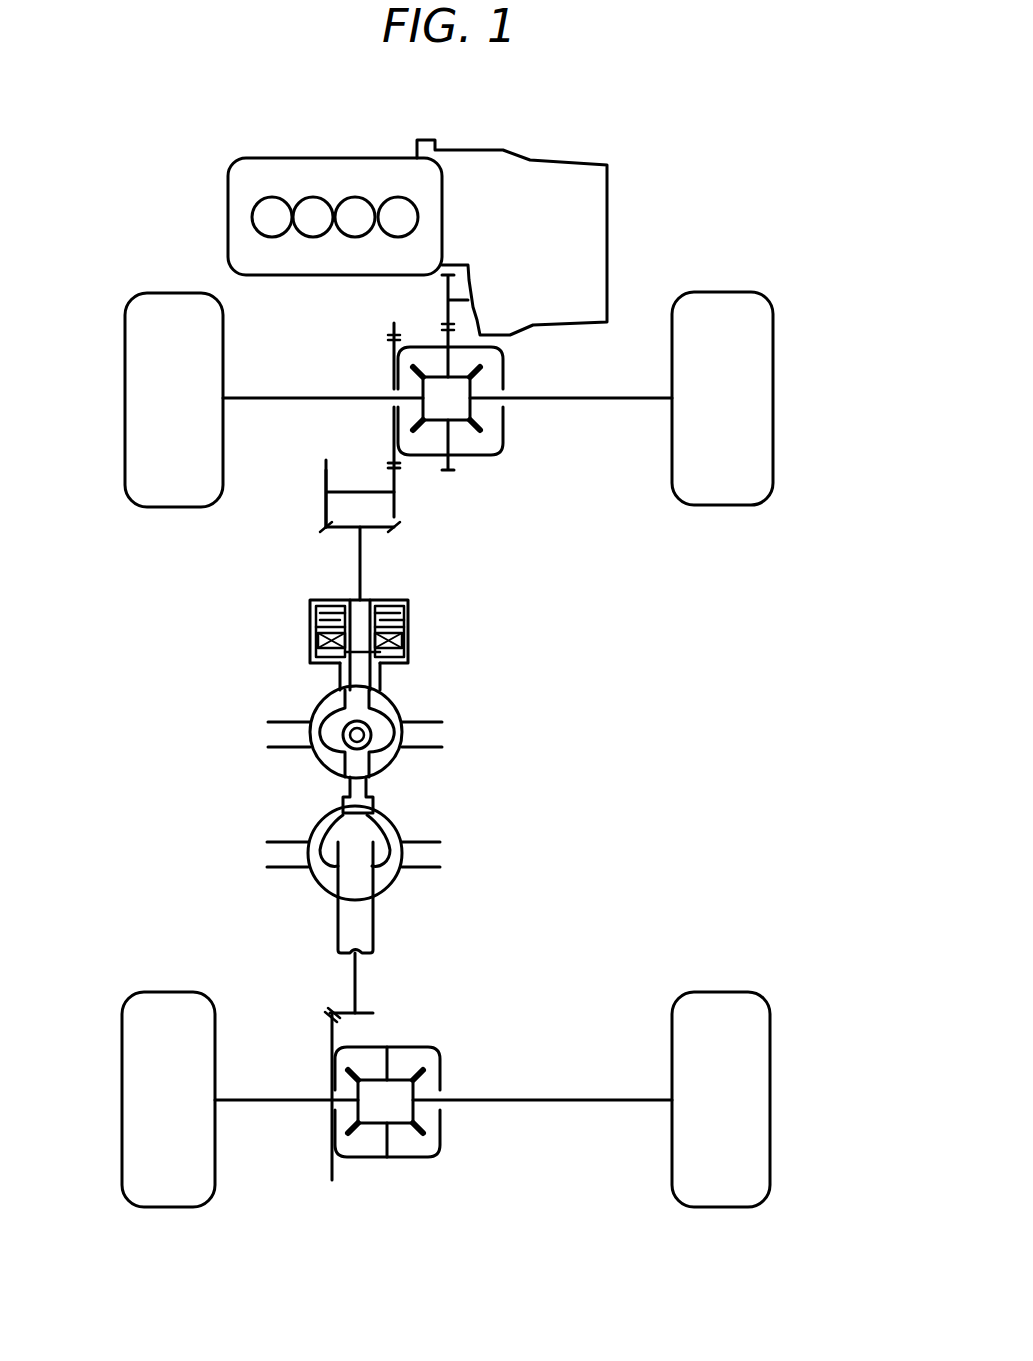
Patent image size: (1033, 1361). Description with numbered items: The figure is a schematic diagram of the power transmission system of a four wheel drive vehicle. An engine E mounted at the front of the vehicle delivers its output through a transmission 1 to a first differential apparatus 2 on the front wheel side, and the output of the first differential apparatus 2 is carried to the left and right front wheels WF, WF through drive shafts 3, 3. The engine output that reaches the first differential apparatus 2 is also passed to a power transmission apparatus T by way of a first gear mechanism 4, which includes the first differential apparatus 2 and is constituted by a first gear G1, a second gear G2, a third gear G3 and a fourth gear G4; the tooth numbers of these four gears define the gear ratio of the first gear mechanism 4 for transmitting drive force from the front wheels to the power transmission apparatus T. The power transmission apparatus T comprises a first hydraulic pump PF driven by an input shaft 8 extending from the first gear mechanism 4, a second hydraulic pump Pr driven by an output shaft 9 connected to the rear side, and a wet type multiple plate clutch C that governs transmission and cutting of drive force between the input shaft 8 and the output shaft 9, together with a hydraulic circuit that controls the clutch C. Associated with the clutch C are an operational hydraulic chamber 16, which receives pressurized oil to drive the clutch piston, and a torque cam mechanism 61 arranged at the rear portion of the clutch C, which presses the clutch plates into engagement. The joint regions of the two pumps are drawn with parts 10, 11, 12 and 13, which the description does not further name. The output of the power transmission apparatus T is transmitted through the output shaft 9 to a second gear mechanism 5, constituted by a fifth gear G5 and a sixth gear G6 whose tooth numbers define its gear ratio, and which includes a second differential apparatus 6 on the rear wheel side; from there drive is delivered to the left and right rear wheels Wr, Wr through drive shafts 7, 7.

The engine E is at (263, 150).
The transmission 1 is at (593, 225).
The front wheels WF is at (175, 300).
The rear wheels Wr is at (170, 1000).
The first differential apparatus 2 is at (503, 380).
The drive shafts 3 is at (328, 398).
The first gear mechanism 4 is at (312, 512).
The first gear G1 is at (393, 322).
The second gear G2 is at (398, 472).
The third gear G3 is at (326, 458).
The fourth gear G4 is at (390, 531).
The fifth gear G5 is at (332, 1186).
The sixth gear G6 is at (383, 1012).
The input shaft 8 is at (362, 590).
The multiple plate clutch C is at (409, 631).
The torque cam mechanism 61 is at (404, 648).
The operational hydraulic chamber 16 is at (382, 668).
The power transmission apparatus T is at (289, 781).
The first hydraulic pump PF is at (300, 702).
The second hydraulic pump Pr is at (300, 878).
The joint yoke 10 is at (290, 748).
The joint yoke 11 is at (410, 747).
The joint yoke 12 is at (302, 842).
The joint yoke 13 is at (412, 842).
The output shaft 9 is at (360, 985).
The second gear mechanism 5 is at (311, 1008).
The second differential apparatus 6 is at (440, 1085).
The drive shafts 7 is at (300, 1100).